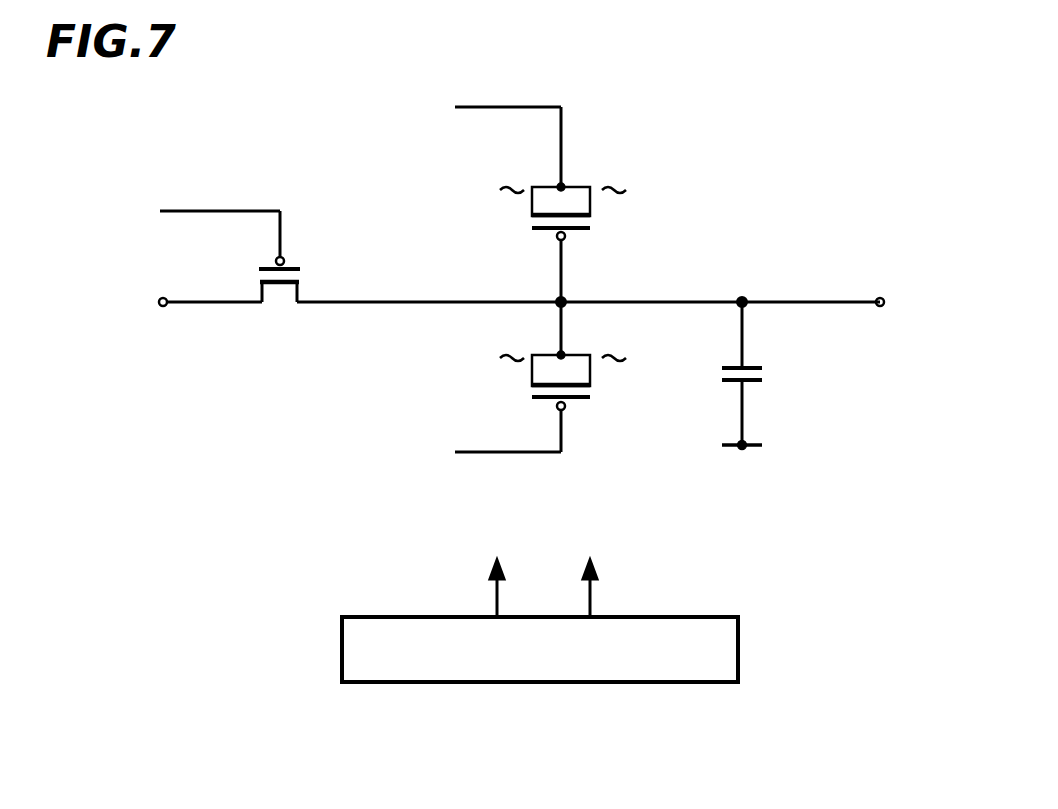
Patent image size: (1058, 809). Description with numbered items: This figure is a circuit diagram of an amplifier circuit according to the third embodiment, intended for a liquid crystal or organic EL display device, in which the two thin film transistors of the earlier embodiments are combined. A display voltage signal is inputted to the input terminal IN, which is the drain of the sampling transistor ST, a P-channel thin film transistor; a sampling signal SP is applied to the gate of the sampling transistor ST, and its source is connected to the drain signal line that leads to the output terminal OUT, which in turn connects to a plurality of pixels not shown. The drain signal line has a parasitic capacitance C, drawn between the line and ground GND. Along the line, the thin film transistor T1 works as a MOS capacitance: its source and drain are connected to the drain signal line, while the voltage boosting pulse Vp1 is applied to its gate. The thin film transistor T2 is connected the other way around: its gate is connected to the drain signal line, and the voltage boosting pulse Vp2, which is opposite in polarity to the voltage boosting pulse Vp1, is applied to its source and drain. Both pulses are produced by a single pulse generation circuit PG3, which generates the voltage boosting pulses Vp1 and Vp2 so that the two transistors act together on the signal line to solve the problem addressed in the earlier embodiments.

The sampling transistor ST is at (292, 262).
The thin film transistor T1 is at (597, 399).
The thin film transistor T2 is at (597, 229).
The parasitic capacitance C is at (756, 405).
The pulse generation circuit PG3 is at (543, 683).
The input terminal IN is at (143, 303).
The output terminal OUT is at (911, 303).
The sampling signal SP is at (197, 228).
The ground GND is at (749, 463).
The voltage boosting pulse Vp1 is at (483, 434).
The voltage boosting pulse Vp2 is at (482, 136).